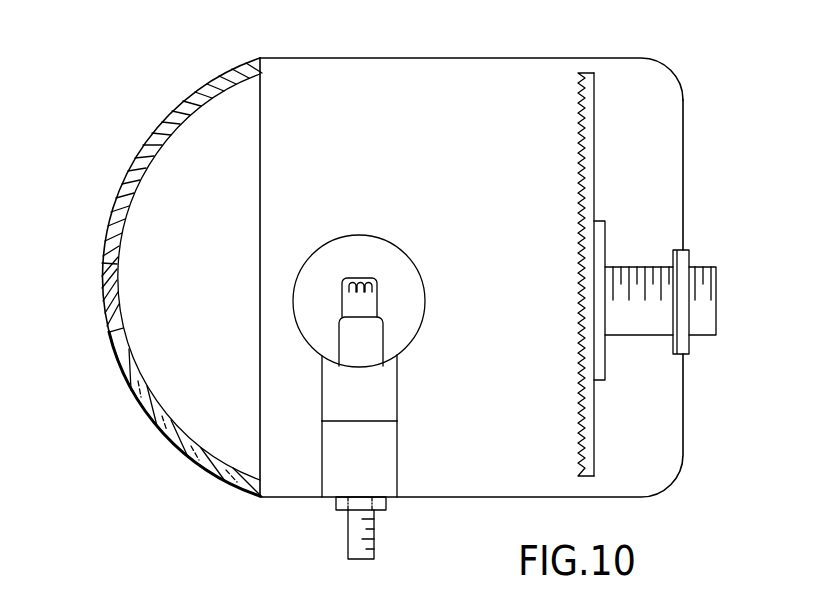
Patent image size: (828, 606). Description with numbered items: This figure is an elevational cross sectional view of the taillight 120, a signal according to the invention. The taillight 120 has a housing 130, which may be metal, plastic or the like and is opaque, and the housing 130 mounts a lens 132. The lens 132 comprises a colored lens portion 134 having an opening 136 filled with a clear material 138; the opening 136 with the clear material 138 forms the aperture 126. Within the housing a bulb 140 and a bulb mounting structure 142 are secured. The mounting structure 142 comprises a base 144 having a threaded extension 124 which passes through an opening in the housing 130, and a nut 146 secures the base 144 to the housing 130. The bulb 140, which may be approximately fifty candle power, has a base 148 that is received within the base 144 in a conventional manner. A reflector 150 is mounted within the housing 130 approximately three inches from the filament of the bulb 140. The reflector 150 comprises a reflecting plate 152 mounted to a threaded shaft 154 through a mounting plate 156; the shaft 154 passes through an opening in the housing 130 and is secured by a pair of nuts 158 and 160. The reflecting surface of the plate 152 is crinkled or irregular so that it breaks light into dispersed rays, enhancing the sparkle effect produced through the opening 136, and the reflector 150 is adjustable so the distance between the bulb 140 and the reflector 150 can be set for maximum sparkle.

The taillight 120 is at (670, 497).
The threaded extension 124 is at (374, 551).
The aperture 126 is at (97, 341).
The housing 130 is at (503, 58).
The lens 132 is at (138, 420).
The colored lens portion 134 is at (134, 161).
The opening 136 is at (115, 263).
The clear material 138 is at (103, 311).
The bulb 140 is at (427, 300).
The bulb mounting structure 142 is at (405, 428).
The base 144 is at (392, 476).
The nut 146 is at (386, 504).
The bulb base 148 is at (397, 385).
The reflector 150 is at (570, 118).
The reflecting plate 152 is at (594, 103).
The threaded shaft 154 is at (640, 328).
The mounting plate 156 is at (601, 247).
The nut 158 is at (683, 250).
The nut 160 is at (688, 354).